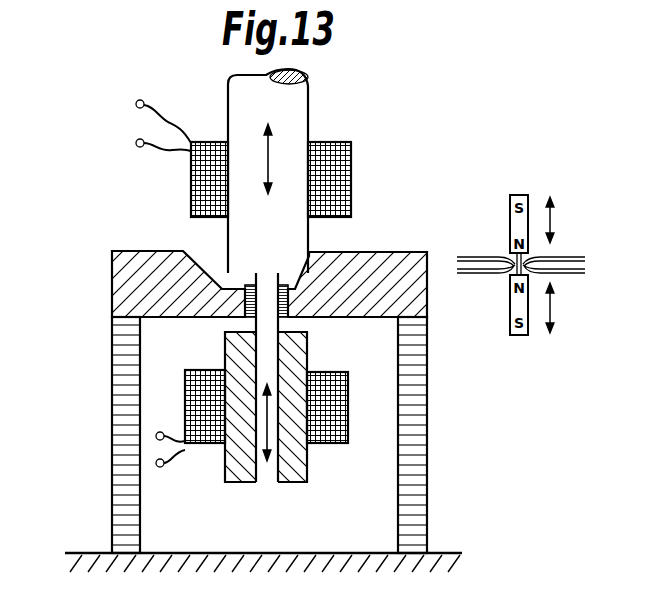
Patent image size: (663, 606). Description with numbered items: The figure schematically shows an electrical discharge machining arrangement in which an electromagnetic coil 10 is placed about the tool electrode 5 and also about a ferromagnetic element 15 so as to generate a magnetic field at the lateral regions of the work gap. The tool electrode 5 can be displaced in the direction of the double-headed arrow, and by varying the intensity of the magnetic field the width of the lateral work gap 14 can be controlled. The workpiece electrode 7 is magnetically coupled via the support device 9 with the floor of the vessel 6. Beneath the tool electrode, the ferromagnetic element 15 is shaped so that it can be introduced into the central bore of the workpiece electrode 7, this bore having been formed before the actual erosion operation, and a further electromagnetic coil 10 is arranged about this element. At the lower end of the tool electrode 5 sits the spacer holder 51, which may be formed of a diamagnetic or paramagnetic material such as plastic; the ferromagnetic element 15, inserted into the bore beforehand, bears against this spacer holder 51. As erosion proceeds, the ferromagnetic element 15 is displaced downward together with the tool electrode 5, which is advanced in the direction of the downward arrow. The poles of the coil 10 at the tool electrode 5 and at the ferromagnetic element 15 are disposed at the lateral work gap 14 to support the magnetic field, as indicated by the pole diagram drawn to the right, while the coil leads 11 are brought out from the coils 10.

The tool electrode 5 is at (232, 103).
The electromagnetic coil 10 is at (333, 164).
The coil lead terminals 11 is at (136, 141).
The workpiece electrode 7 is at (136, 256).
The lateral work gap 14 is at (300, 287).
The spacer holder 51 is at (268, 290).
The ferromagnetic element 15 is at (232, 466).
The support device 9 is at (120, 372).
The vessel 6 is at (440, 563).